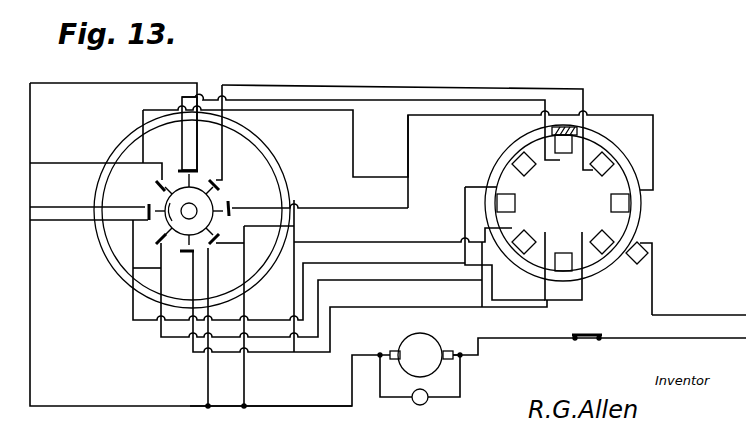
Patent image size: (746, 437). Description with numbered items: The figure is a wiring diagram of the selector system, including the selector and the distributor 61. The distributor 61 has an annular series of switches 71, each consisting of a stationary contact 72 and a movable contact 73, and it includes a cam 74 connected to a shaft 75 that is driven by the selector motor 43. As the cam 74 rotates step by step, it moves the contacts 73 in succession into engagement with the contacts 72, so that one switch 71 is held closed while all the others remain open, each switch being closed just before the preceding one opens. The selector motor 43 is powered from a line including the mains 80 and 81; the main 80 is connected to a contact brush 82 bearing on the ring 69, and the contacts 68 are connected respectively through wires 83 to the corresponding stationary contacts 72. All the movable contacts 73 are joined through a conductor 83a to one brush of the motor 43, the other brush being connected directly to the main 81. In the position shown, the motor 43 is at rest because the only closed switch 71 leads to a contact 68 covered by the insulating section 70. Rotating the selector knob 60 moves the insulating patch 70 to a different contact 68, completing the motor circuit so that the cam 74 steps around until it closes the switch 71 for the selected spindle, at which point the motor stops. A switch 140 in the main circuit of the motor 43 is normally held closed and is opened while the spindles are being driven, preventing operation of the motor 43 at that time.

The wires 83 is at (395, 76).
The conductor 83a is at (182, 407).
The distributor 61 is at (258, 150).
The movable contact 73 is at (170, 180).
The stationary contact 72 is at (157, 188).
The switch 71 is at (144, 210).
The cam 74 is at (214, 207).
The shaft 75 is at (189, 209).
The insulating section 70 is at (565, 128).
The contacts 68 is at (603, 160).
The ring 69 is at (630, 176).
The selector knob 60 is at (641, 208).
The contact brush 82 is at (641, 251).
The main 80 is at (733, 313).
The main 81 is at (718, 339).
The switch 140 is at (574, 340).
The selector motor 43 is at (410, 344).